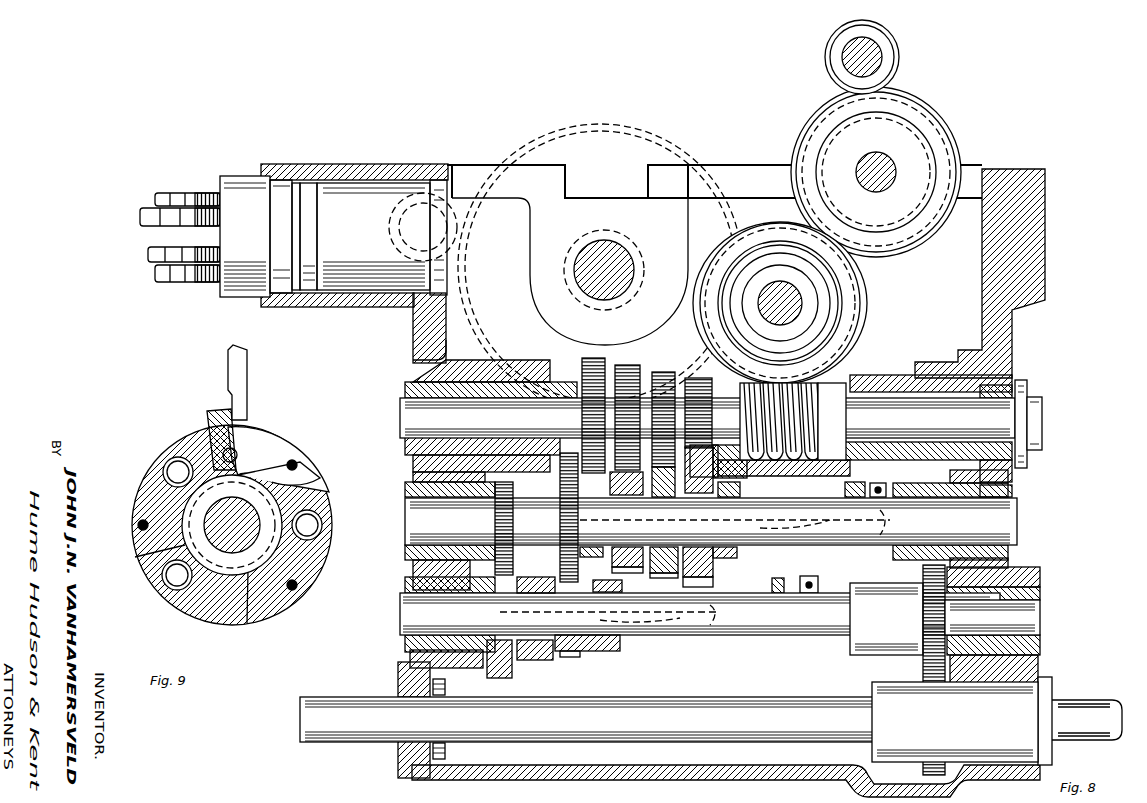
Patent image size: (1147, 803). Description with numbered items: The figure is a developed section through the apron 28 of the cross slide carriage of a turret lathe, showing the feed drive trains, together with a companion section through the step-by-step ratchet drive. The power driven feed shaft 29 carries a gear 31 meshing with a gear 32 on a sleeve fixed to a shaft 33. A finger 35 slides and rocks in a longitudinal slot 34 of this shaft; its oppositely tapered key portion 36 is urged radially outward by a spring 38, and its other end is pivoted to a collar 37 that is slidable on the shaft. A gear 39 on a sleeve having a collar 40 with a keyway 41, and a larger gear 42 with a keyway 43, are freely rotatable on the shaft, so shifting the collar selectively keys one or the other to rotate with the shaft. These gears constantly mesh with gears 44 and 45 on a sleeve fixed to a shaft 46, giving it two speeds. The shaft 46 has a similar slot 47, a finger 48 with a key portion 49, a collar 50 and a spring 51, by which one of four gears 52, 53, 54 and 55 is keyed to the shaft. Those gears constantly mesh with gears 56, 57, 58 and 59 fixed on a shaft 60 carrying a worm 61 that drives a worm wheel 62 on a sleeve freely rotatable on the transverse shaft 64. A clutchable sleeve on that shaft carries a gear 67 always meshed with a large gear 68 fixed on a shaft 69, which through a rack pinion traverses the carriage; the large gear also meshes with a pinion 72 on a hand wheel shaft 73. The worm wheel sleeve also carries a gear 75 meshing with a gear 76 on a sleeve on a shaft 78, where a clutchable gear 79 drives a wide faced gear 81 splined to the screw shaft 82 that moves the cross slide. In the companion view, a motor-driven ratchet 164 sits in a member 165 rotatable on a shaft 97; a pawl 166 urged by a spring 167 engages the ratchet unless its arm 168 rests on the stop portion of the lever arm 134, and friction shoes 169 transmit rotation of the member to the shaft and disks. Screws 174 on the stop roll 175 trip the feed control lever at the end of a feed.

In FIG. 8, the apron 28 is at (1020, 170).
In FIG. 8, the feed shaft 29 is at (1082, 700).
In FIG. 8, the gear 31 is at (938, 724).
In FIG. 8, the gear 32 is at (922, 616).
In FIG. 8, the shaft 33 is at (845, 636).
In FIG. 8, the slot 34 is at (718, 636).
In FIG. 8, the finger 35 is at (640, 640).
In FIG. 8, the key portion 36 is at (535, 598).
In FIG. 8, the collar 37 is at (812, 576).
In FIG. 8, the spring 38 is at (652, 640).
In FIG. 8, the gear 39 is at (575, 657).
In FIG. 8, the collar 40 is at (527, 660).
In FIG. 8, the keyway 41 is at (535, 576).
In FIG. 8, the gear 42 is at (492, 672).
In FIG. 8, the keyway 43 is at (490, 606).
In FIG. 8, the gear 44 is at (562, 510).
In FIG. 8, the gear 45 is at (497, 512).
In FIG. 8, the shaft 46 is at (1010, 522).
In FIG. 8, the slot 47 is at (895, 522).
In FIG. 8, the finger 48 is at (750, 527).
In FIG. 8, the key portion 49 is at (770, 497).
In FIG. 8, the collar 50 is at (845, 497).
In FIG. 8, the spring 51 is at (780, 527).
In FIG. 8, the gear 52 is at (602, 545).
In FIG. 8, the gear 53 is at (655, 545).
In FIG. 8, the gear 54 is at (695, 545).
In FIG. 8, the gear 55 is at (712, 566).
In FIG. 8, the gear 56 is at (585, 366).
In FIG. 8, the gear 57 is at (626, 368).
In FIG. 8, the gear 58 is at (660, 375).
In FIG. 8, the gear 59 is at (700, 380).
In FIG. 8, the shaft 60 is at (1030, 396).
In FIG. 8, the worm 61 is at (820, 432).
In FIG. 8, the worm wheel 62 is at (840, 348).
In FIG. 8, the shaft 64 is at (779, 282).
In FIG. 8, the gear 67 is at (815, 300).
In FIG. 8, the large gear 68 is at (615, 128).
In FIG. 8, the shaft 69 is at (600, 272).
In FIG. 8, the pinion 72 is at (400, 228).
In FIG. 8, the shaft 73 is at (428, 192).
In FIG. 8, the gear 75 is at (860, 350).
In FIG. 8, the gear 76 is at (888, 254).
In FIG. 8, the shaft 78 is at (890, 165).
In FIG. 8, the gear 79 is at (945, 128).
In FIG. 8, the wide faced gear 81 is at (896, 62).
In FIG. 8, the screw shaft 82 is at (880, 50).
In FIG. 9, the shaft 97 is at (232, 525).
In FIG. 9, the lever arm 134 is at (250, 372).
In FIG. 9, the ratchet 164 is at (248, 600).
In FIG. 9, the member 165 is at (310, 575).
In FIG. 9, the pawl 166 is at (280, 452).
In FIG. 9, the spring 167 is at (195, 440).
In FIG. 9, the arm 168 is at (222, 410).
In FIG. 9, the friction shoes 169 is at (177, 590).
In FIG. 8, the screws 174 is at (217, 193).
In FIG. 8, the stop roll 175 is at (240, 290).